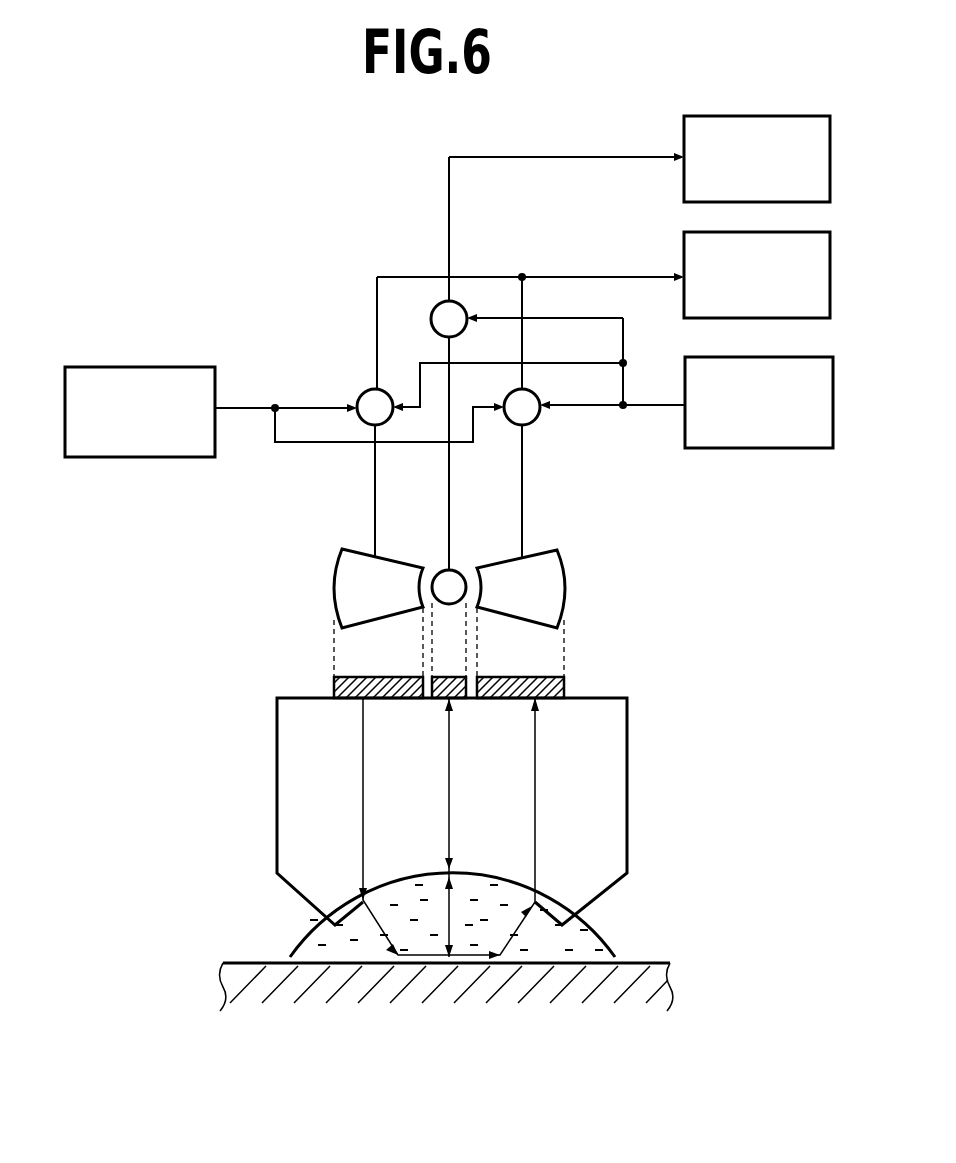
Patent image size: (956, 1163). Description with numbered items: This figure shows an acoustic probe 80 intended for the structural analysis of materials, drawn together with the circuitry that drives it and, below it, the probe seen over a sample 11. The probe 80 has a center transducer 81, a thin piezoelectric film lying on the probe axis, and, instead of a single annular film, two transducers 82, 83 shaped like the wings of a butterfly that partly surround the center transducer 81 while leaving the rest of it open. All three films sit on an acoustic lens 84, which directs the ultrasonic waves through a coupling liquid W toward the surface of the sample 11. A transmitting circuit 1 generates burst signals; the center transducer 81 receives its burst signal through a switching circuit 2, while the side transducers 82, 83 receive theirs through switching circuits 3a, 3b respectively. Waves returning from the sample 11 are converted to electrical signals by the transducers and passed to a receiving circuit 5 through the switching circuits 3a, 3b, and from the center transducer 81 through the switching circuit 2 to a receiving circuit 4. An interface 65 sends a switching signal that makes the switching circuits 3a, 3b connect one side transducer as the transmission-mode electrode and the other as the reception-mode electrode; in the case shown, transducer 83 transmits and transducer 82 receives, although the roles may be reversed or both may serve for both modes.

The transmitting circuit 1 is at (833, 369).
The switching circuit 2 is at (435, 308).
The switching circuit 3a is at (535, 422).
The switching circuit 3b is at (360, 422).
The signal receiving circuit 4 is at (830, 127).
The signal receiving circuit 5 is at (830, 240).
The sample 11 is at (660, 985).
The interface 65 is at (183, 368).
The acoustic probe 80 is at (665, 707).
The center transducer 81 is at (461, 572).
The transducer 82 is at (565, 574).
The transducer 83 is at (333, 575).
The acoustic lens 84 is at (608, 813).
The liquid droplet (water) W is at (593, 935).